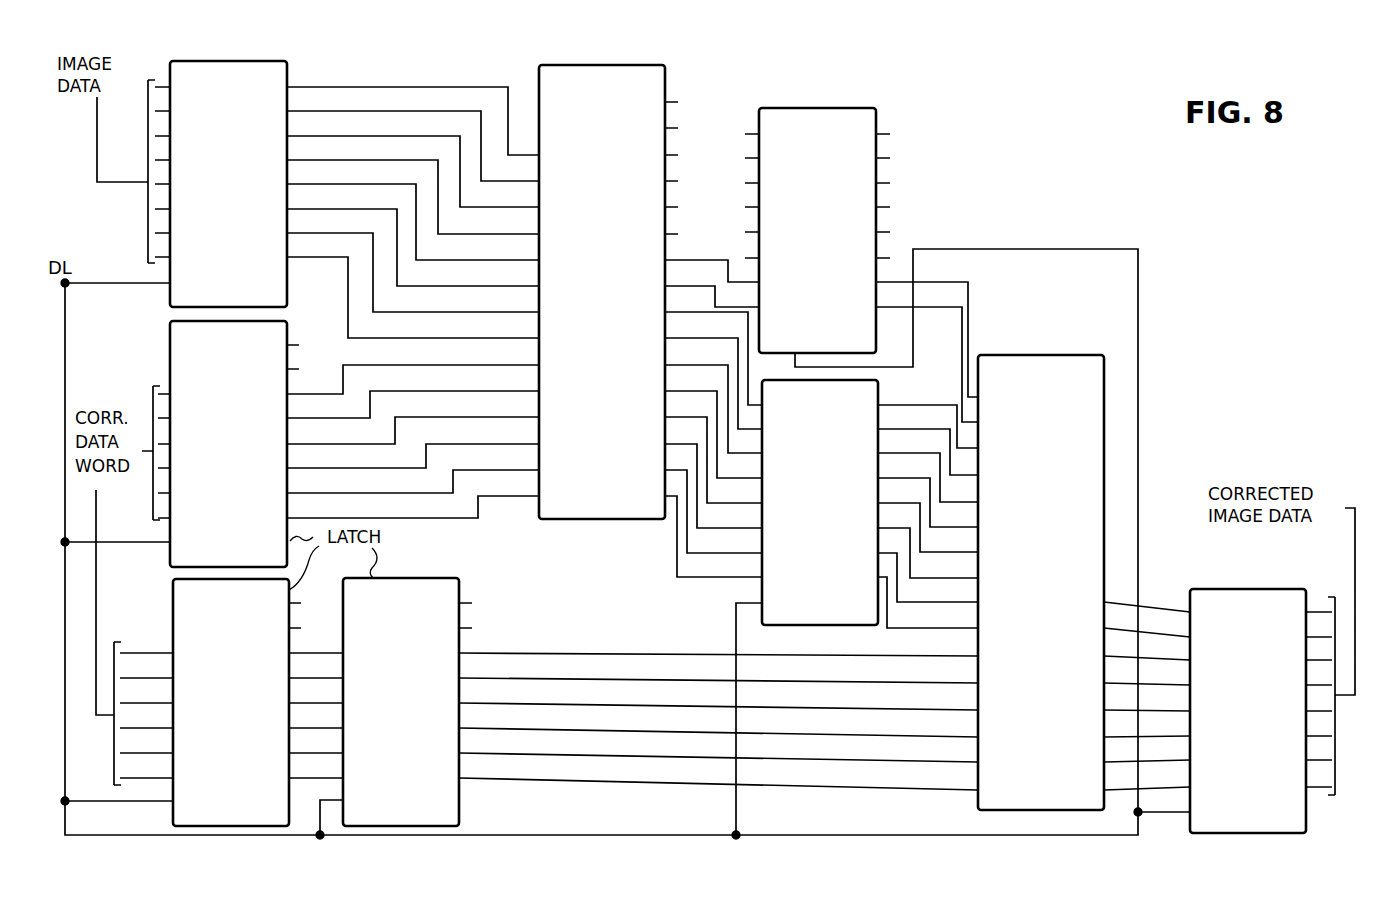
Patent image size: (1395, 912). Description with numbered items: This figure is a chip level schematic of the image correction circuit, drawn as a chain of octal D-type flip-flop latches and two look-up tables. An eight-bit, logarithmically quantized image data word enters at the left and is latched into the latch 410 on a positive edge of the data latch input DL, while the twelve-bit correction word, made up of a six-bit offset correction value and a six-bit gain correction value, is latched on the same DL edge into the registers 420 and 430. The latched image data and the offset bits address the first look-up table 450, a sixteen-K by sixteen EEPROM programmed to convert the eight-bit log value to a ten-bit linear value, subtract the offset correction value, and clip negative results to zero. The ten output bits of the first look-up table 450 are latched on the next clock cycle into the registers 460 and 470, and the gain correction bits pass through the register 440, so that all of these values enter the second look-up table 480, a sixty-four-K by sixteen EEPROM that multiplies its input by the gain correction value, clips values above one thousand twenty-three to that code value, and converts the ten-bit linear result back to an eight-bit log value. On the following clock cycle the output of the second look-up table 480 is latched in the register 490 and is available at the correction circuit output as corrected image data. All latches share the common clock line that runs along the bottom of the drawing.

The latch 410 is at (290, 70).
The register 420 is at (170, 342).
The register 430 is at (173, 613).
The register 440 is at (460, 590).
The first look-up table 450 is at (636, 66).
The register 460 is at (878, 126).
The register 470 is at (868, 627).
The second look-up table 480 is at (1052, 355).
The register 490 is at (1288, 589).